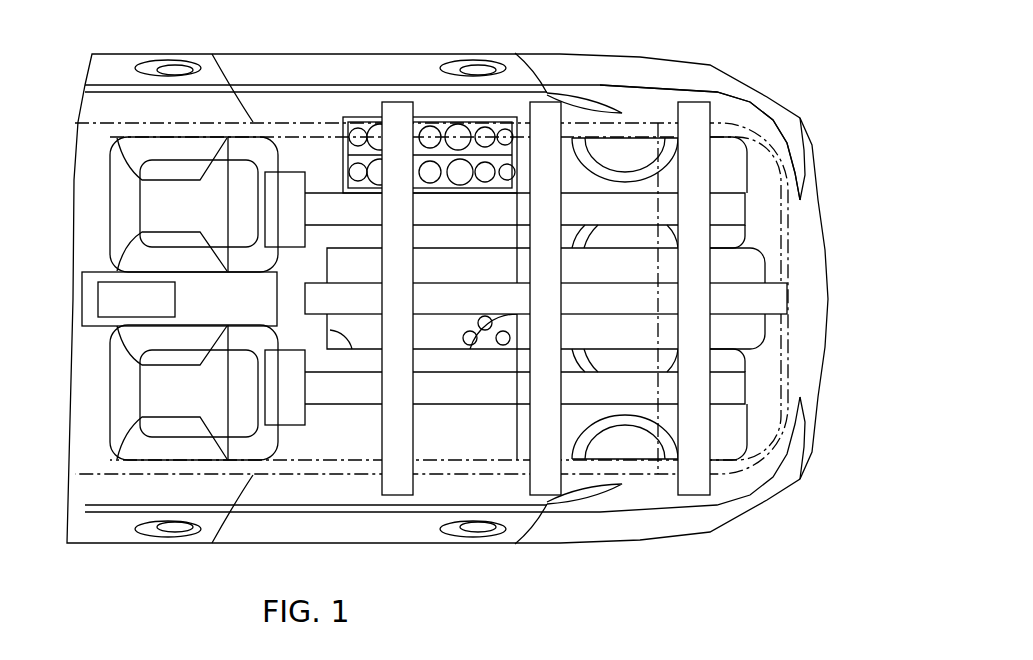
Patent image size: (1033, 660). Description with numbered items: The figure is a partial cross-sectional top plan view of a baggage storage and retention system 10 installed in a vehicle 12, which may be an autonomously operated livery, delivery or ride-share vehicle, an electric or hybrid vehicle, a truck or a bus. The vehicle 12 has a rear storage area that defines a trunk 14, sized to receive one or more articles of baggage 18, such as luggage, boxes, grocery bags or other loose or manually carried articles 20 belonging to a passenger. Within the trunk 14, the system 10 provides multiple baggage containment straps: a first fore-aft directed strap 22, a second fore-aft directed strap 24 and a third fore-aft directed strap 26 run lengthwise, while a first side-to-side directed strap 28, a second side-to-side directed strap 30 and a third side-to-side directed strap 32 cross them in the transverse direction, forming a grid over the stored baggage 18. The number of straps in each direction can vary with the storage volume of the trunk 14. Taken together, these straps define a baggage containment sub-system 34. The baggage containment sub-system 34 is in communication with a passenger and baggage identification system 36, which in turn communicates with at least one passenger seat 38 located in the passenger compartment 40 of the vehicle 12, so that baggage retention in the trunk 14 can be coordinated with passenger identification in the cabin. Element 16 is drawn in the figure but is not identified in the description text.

The baggage storage and retention system 10 is at (766, 50).
The vehicle 12 is at (572, 56).
The trunk 14 is at (752, 143).
The floor panel 16 is at (433, 443).
The baggage 18 is at (748, 335).
The manually carried articles 20 is at (727, 168).
The first fore-aft directed strap 22 is at (755, 212).
The second fore-aft directed strap 24 is at (753, 297).
The third fore-aft directed strap 26 is at (755, 387).
The first side-to-side directed strap 28 is at (399, 108).
The second side-to-side directed strap 30 is at (550, 485).
The third side-to-side directed strap 32 is at (697, 108).
The baggage containment sub-system 34 is at (760, 410).
The passenger and baggage identification system 36 is at (118, 298).
The passenger seat 38 is at (125, 398).
The passenger compartment 40 is at (115, 490).